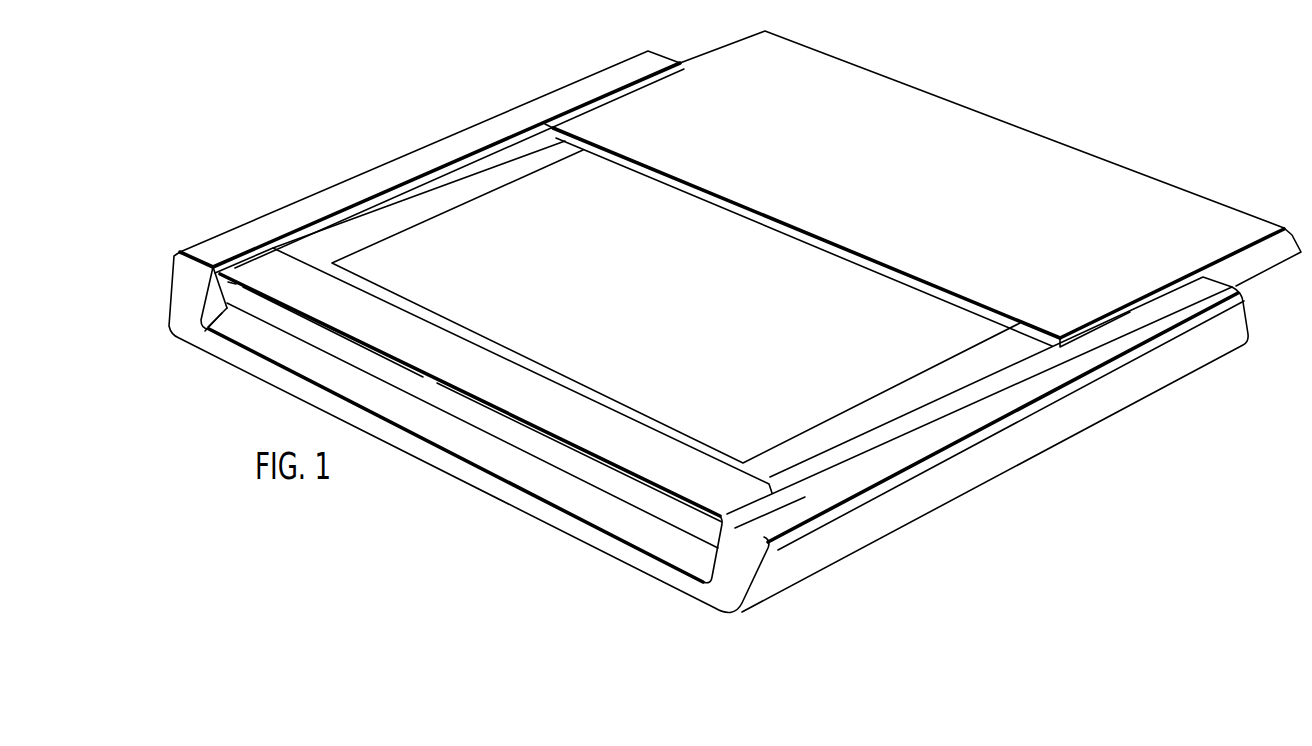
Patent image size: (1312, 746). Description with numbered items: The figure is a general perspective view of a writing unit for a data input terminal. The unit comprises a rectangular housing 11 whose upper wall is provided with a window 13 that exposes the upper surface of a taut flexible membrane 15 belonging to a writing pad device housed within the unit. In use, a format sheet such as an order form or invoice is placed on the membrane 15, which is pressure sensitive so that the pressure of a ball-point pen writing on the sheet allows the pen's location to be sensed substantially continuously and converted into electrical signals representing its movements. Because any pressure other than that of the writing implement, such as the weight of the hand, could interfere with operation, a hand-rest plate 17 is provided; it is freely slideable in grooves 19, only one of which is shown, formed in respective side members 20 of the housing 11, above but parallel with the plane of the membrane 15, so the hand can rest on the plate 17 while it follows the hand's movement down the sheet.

The rectangular housing 11 is at (298, 196).
The window 13 is at (498, 346).
The flexible membrane 15 is at (676, 306).
The hand-rest plate 17 is at (913, 107).
The grooves 19 is at (506, 150).
The side members 20 is at (392, 166).